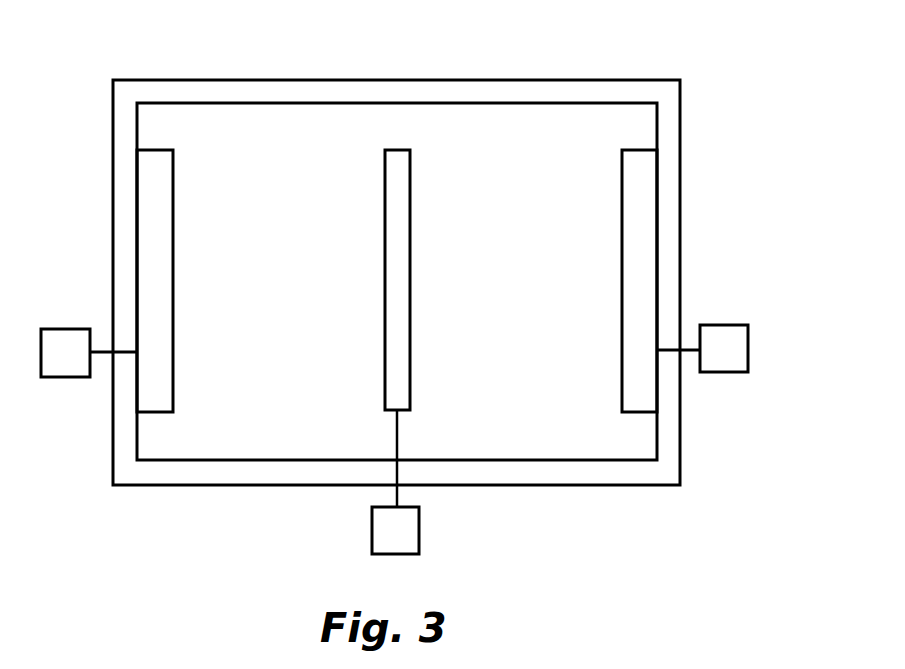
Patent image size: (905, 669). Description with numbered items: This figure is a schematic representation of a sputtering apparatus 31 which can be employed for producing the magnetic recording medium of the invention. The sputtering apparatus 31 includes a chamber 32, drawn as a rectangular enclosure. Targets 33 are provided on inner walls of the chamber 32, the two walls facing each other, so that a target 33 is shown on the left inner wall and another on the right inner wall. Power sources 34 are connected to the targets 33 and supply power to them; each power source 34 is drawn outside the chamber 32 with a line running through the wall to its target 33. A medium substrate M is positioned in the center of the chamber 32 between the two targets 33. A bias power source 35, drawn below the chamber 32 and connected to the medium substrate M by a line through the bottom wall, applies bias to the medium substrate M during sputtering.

The sputtering apparatus 31 is at (693, 82).
The chamber 32 is at (680, 121).
The targets 33 is at (137, 203).
The power sources 34 is at (69, 378).
The medium substrate M is at (410, 337).
The bias power source 35 is at (419, 526).